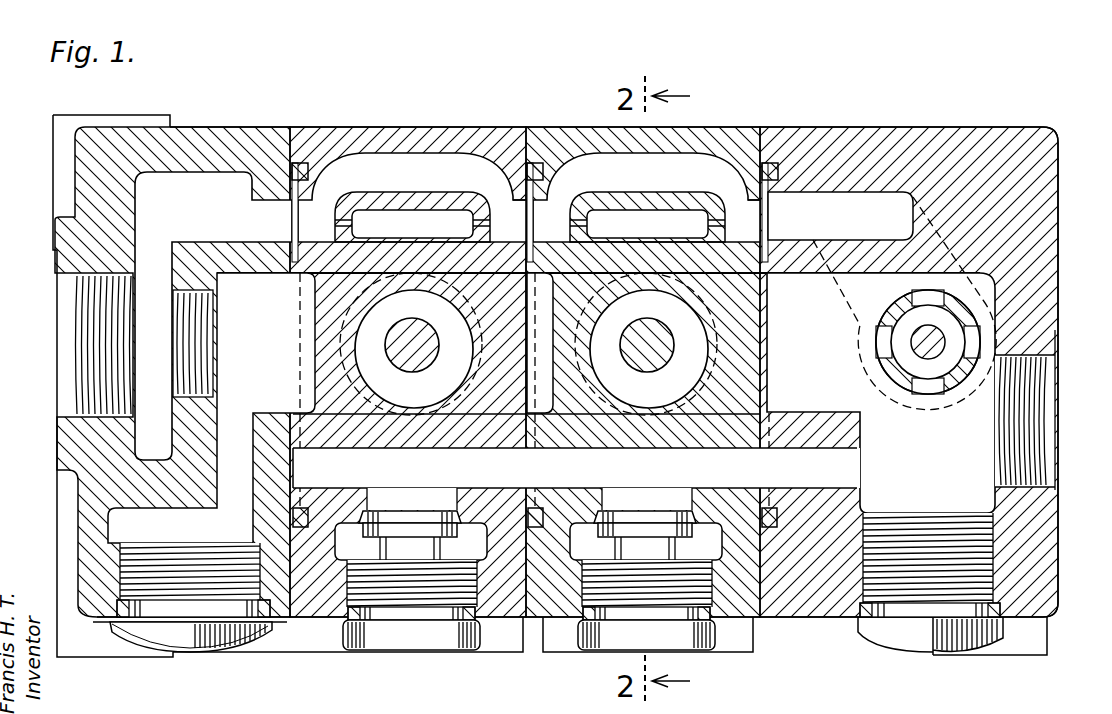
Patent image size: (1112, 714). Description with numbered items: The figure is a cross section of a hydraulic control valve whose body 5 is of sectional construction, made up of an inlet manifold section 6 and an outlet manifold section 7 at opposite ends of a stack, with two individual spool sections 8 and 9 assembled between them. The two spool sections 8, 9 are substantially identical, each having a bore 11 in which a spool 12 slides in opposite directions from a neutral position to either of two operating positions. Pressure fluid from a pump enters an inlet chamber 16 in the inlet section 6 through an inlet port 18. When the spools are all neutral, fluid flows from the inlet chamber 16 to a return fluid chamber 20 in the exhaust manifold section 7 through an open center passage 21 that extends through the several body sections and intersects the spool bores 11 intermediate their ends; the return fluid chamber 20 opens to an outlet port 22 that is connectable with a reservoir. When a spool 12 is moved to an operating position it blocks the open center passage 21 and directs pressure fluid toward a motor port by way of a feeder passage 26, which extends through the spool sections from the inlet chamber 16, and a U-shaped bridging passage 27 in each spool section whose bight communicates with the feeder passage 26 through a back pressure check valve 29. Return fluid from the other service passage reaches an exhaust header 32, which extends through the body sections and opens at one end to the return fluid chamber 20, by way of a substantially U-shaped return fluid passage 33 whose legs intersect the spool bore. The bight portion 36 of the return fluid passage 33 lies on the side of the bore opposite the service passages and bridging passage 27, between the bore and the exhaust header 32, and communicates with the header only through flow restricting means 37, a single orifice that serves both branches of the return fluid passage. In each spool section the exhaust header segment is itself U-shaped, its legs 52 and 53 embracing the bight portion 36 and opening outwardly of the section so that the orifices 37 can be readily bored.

The body of a hydraulic control valve 5 is at (871, 100).
The inlet manifold section 6 is at (1060, 258).
The outlet manifold section 7 is at (53, 234).
The spool section 8 is at (737, 127).
The spool section 9 is at (437, 127).
The bore 11 is at (370, 322).
The spool 12 is at (378, 374).
The inlet chamber 16 is at (937, 457).
The inlet port 18 is at (1040, 437).
The return fluid chamber 20 is at (165, 344).
The open center passage 21 is at (770, 300).
The outlet port 22 is at (88, 337).
The feeder passage 26 is at (621, 481).
The bridging passage 27 is at (485, 556).
The back pressure check valve 29 is at (414, 508).
The exhaust header 32 is at (651, 189).
The return fluid passage 33 is at (395, 213).
The bight portion 36 is at (421, 236).
The flow restricting means 37 is at (530, 226).
The leg of exhaust header 52 is at (321, 232).
The leg of exhaust header 53 is at (517, 230).